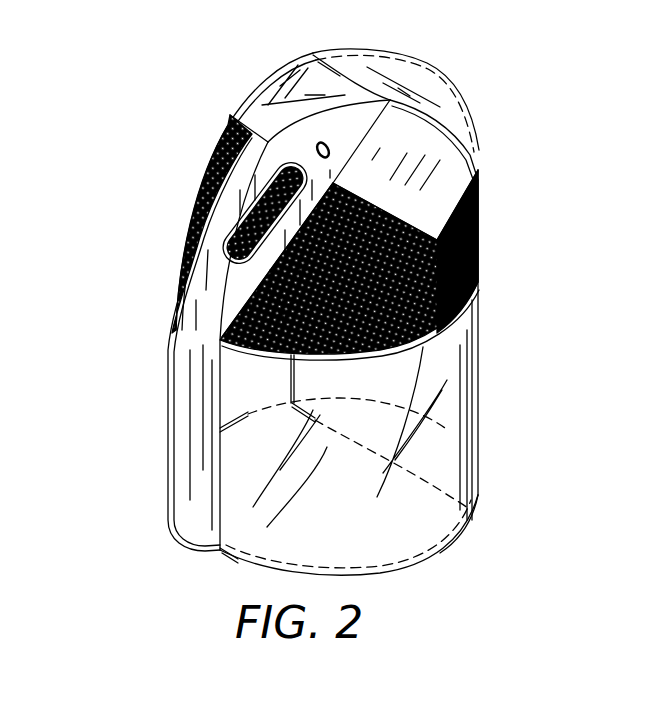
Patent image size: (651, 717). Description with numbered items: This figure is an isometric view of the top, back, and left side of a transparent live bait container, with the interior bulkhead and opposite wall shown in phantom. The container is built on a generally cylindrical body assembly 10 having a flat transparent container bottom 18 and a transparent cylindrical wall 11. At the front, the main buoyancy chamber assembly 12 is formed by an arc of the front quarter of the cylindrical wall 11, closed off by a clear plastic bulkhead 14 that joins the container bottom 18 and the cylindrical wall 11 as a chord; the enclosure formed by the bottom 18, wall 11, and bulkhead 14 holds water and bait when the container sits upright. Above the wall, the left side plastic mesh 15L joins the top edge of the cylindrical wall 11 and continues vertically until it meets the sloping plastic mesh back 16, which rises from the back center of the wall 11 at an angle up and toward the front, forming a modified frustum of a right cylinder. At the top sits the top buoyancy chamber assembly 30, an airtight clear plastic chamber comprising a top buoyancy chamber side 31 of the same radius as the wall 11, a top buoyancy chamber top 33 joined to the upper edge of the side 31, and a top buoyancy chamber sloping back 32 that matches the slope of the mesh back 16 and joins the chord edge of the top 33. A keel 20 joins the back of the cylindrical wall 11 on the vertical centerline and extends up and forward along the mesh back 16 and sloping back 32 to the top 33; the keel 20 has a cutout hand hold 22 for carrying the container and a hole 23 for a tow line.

The cylindrical body assembly 10 is at (428, 558).
The cylindrical wall 11 is at (478, 353).
The main buoyancy chamber assembly 12 is at (415, 471).
The bulkhead 14 is at (474, 510).
The left side plastic mesh 15L is at (478, 260).
The sloping plastic mesh back 16 is at (476, 168).
The container bottom 18 is at (233, 560).
The keel 20 is at (168, 362).
The hand hold 22 is at (245, 212).
The hole 23 is at (318, 146).
The top buoyancy chamber assembly 30 is at (262, 80).
The top buoyancy chamber side 31 is at (422, 70).
The top buoyancy chamber sloping back 32 is at (458, 138).
The top buoyancy chamber top 33 is at (365, 52).